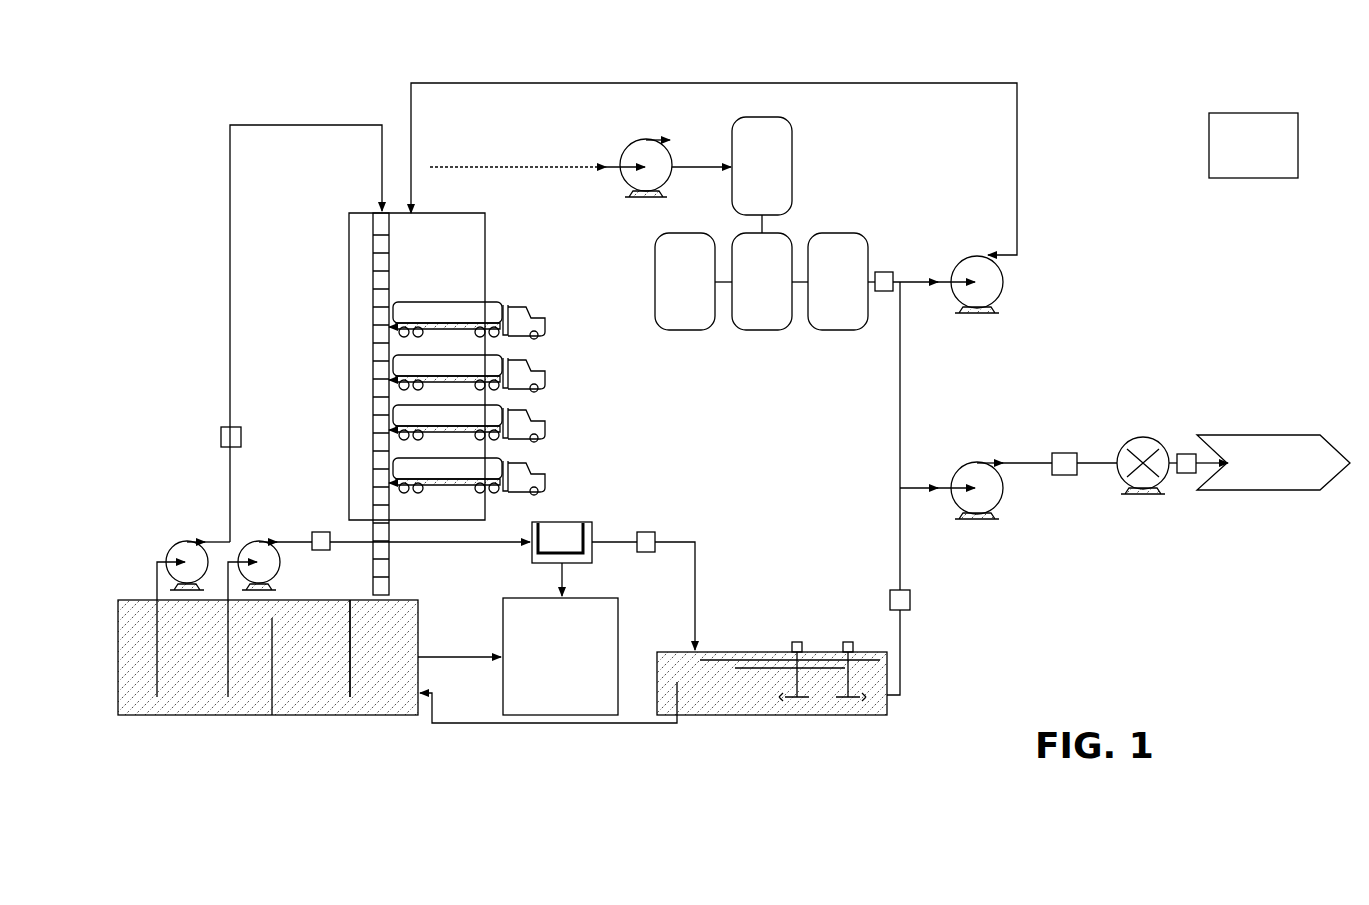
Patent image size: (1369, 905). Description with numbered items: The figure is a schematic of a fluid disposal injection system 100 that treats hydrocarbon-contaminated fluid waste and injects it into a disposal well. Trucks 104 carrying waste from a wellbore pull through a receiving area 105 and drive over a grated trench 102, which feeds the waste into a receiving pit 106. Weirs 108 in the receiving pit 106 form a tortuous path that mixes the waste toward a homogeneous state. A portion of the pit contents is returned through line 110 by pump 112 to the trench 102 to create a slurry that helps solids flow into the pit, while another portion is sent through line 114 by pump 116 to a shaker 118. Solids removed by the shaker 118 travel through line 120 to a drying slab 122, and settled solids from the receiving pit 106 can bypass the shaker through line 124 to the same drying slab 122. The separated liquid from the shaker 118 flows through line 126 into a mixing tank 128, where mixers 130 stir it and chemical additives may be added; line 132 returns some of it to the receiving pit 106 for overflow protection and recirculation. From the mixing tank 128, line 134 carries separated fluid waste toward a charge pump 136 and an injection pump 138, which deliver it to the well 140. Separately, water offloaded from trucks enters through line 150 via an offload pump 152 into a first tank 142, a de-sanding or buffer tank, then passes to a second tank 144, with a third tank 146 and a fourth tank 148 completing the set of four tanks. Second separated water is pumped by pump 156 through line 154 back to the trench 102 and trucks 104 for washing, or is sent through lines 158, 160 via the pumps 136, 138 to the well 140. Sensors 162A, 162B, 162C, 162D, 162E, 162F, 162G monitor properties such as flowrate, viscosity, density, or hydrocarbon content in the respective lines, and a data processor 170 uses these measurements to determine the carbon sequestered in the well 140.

The fluid disposal injection system 100 is at (250, 40).
The trench 102 is at (373, 272).
The trucks 104 is at (545, 430).
The receiving area 105 is at (349, 340).
The receiving pit 106 is at (367, 737).
The weirs 108 is at (348, 663).
The line 110 is at (230, 368).
The pump 112 is at (185, 541).
The line 114 is at (442, 544).
The pump 116 is at (259, 541).
The shaker 118 is at (592, 530).
The line 120 is at (565, 580).
The drying slab 122 is at (620, 632).
The line 124 is at (450, 655).
The line 126 is at (696, 587).
The mixing tank 128 is at (728, 652).
The mixers 130 is at (790, 715).
The line 132 is at (462, 723).
The line 134 is at (902, 665).
The charge pump 136 is at (963, 459).
The injection pump 138 is at (1135, 440).
The well 140 is at (1237, 435).
The first tank 142 is at (793, 160).
The second tank 144 is at (770, 281).
The third tank 146 is at (693, 281).
The fourth tank 148 is at (841, 281).
The line 150 is at (572, 162).
The offload pump 152 is at (645, 140).
The line 154 is at (1017, 150).
The pump 156 is at (1003, 278).
The line 158 is at (902, 413).
The line 160 is at (905, 480).
The sensor 162A is at (241, 437).
The sensor 162B is at (321, 550).
The sensor 162C is at (650, 532).
The sensor 162D is at (910, 600).
The sensor 162E is at (883, 291).
The sensor 162F is at (1185, 474).
The sensor 162G is at (1062, 453).
The data processor 170 is at (1253, 145).